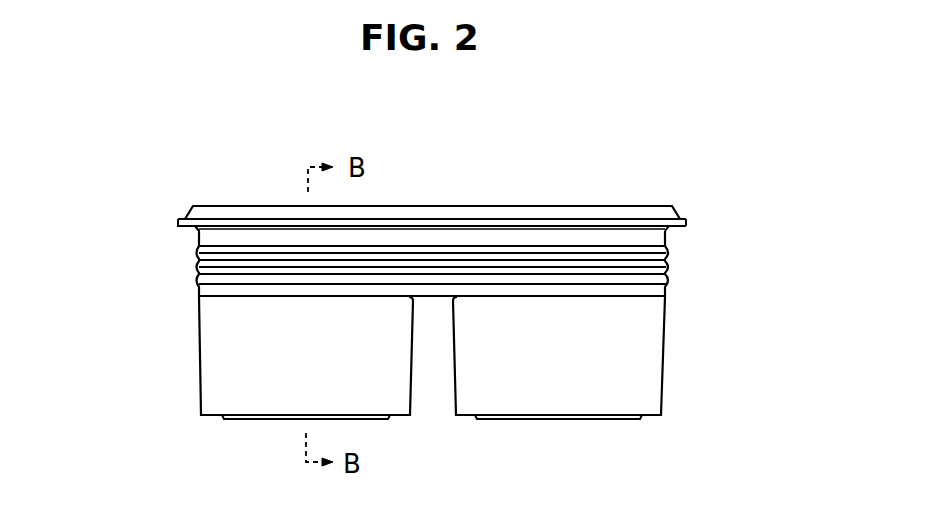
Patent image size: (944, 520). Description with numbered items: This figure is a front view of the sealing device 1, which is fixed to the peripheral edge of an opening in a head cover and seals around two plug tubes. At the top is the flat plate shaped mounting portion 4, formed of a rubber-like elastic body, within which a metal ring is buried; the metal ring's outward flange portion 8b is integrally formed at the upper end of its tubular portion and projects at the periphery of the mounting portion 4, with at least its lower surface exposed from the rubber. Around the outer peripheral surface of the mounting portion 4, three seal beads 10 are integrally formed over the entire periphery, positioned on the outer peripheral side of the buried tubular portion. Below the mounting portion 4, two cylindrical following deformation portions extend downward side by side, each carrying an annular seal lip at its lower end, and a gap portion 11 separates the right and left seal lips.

The sealing device 1 is at (195, 192).
The mounting portion 4 is at (442, 241).
The flange portion 8b is at (688, 226).
The seal beads 10 is at (668, 255).
The gap portion 11 is at (432, 390).